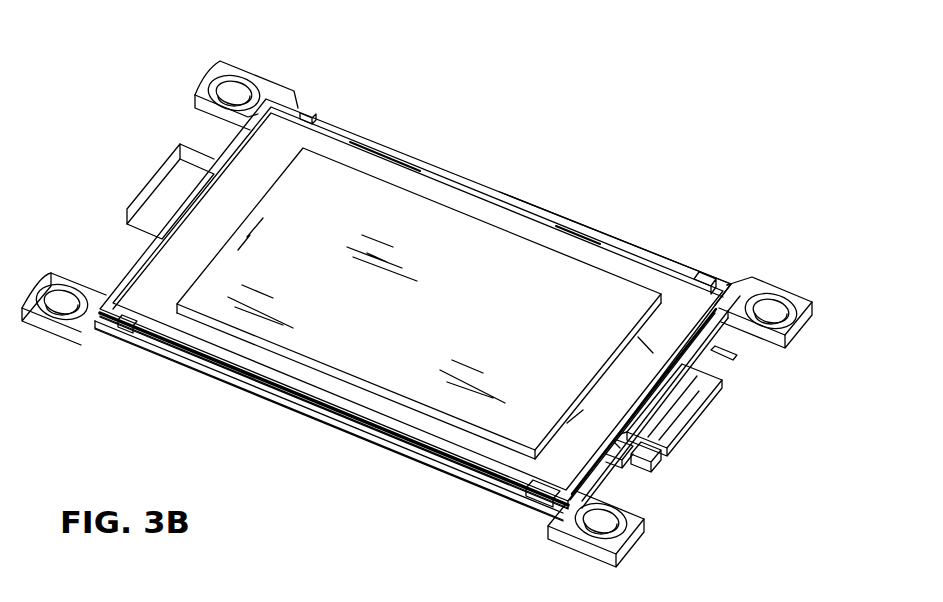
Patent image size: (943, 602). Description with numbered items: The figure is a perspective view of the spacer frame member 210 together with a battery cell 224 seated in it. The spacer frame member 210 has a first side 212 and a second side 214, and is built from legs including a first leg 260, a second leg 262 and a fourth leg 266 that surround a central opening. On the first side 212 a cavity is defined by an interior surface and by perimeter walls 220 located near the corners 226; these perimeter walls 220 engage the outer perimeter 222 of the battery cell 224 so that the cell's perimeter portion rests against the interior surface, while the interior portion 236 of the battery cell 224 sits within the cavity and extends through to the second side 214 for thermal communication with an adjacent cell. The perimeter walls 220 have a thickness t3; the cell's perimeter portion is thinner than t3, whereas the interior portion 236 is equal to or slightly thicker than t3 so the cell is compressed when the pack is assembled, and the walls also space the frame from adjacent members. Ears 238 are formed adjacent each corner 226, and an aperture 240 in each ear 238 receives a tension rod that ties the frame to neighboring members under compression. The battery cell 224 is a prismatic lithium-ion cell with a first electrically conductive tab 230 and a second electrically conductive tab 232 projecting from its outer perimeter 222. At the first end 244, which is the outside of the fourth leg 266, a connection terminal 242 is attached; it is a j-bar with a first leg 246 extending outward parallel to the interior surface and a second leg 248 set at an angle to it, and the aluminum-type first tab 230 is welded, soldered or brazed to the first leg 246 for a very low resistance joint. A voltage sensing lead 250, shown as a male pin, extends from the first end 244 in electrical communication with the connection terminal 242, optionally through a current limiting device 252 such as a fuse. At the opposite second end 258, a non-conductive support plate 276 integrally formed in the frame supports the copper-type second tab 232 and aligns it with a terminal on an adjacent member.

The spacer frame member 210 is at (578, 138).
The first side 212 is at (422, 158).
The second side 214 is at (168, 365).
The thickness of the perimeter walls t3 is at (318, 119).
The perimeter walls 220 is at (124, 333).
The outer perimeter 222 is at (232, 378).
The battery cell 224 is at (485, 331).
The corners 226 is at (113, 292).
The first electrically conductive tab 230 is at (677, 398).
The second electrically conductive tab 232 is at (180, 160).
The interior portion 236 is at (330, 354).
The ears 238 is at (803, 303).
The aperture 240 is at (780, 316).
The connection terminal 242 is at (722, 385).
The first end 244 is at (632, 467).
The first leg 246 is at (677, 418).
The second leg 248 is at (678, 448).
The voltage sensing lead 250 is at (742, 350).
The current limiting device 252 is at (740, 358).
The second end 258 is at (233, 130).
The first leg 260 is at (570, 222).
The second leg 262 is at (380, 432).
The fourth leg 266 is at (600, 480).
The support plate 276 is at (127, 218).